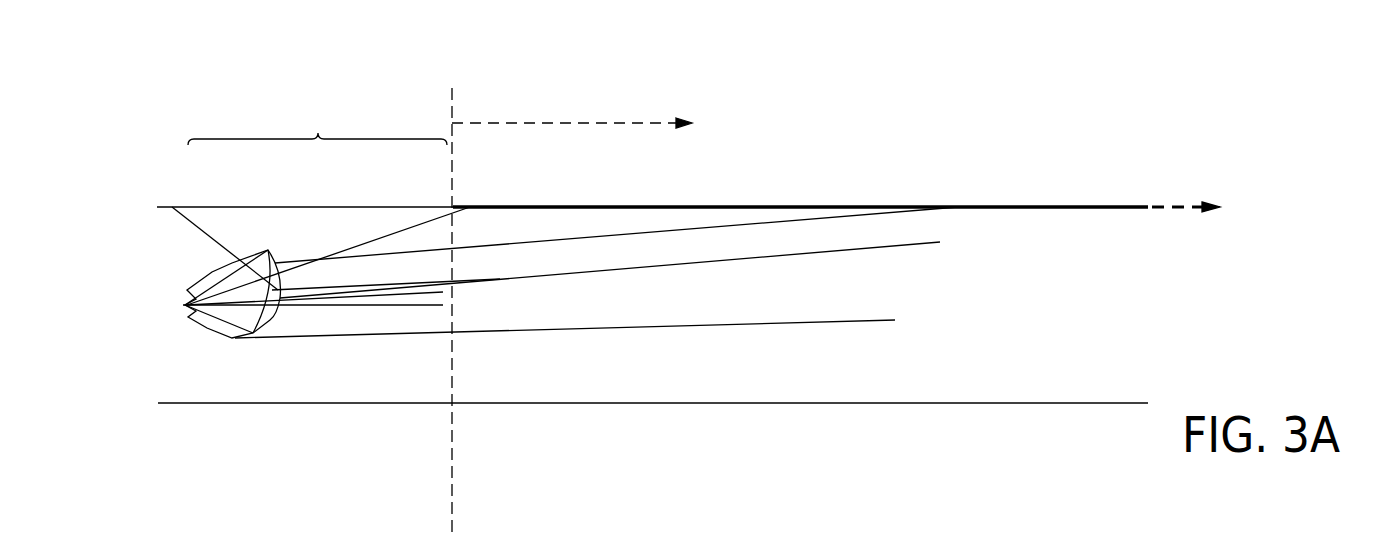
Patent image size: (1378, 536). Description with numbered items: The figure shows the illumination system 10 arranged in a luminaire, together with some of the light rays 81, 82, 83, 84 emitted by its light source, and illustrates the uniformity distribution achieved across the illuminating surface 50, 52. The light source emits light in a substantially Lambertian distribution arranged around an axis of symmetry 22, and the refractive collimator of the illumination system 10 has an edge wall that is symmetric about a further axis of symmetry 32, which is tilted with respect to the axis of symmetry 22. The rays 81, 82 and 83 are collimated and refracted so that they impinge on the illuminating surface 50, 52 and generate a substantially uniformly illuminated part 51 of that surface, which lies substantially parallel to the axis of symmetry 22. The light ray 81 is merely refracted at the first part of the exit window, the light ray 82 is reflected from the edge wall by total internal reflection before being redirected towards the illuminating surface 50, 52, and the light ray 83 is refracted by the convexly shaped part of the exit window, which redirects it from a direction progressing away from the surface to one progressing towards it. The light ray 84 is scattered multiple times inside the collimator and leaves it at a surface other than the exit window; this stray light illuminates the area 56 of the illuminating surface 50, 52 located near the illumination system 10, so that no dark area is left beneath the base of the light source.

The illumination system 10 is at (245, 350).
The axis of symmetry 22 is at (340, 307).
The further axis of symmetry 32 is at (398, 295).
The illuminating surface 50 is at (836, 245).
The illuminating surface 52 is at (1064, 219).
The homogeneously illuminated part 51 is at (655, 122).
The area near the illumination system 56 is at (317, 125).
The light ray 81 is at (385, 235).
The light ray 82 is at (572, 236).
The light ray 83 is at (508, 331).
The light ray 84 is at (197, 226).